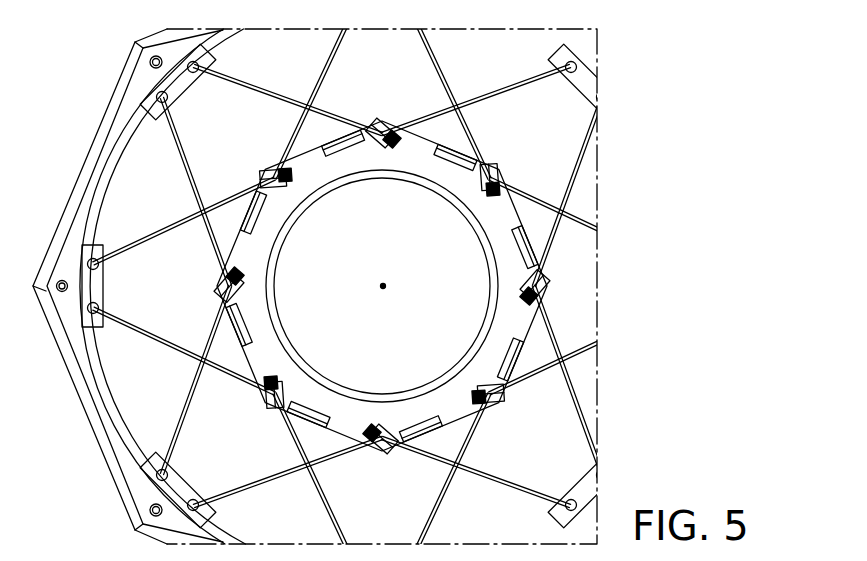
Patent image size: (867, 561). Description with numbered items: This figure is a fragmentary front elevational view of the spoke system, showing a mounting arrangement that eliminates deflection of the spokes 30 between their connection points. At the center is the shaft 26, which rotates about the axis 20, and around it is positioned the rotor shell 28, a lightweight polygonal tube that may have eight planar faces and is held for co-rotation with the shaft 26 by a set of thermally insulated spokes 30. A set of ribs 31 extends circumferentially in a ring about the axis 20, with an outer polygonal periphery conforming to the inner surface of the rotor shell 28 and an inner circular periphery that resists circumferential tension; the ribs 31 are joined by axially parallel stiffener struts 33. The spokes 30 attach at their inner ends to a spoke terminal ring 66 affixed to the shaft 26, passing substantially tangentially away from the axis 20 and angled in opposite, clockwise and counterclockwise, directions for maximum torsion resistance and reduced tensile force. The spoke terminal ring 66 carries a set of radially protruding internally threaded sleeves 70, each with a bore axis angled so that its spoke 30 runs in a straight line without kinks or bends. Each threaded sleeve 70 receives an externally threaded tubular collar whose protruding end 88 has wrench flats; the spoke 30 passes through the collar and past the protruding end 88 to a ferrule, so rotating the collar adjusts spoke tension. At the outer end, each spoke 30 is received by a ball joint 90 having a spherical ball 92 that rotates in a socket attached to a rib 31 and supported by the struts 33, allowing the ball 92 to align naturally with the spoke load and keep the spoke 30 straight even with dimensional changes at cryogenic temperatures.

The axis 20 is at (386, 286).
The shaft 26 is at (380, 184).
The rotor shell 28 is at (115, 98).
The spokes 30 is at (147, 334).
The ribs 31 is at (62, 257).
The stiffener struts 33 is at (60, 287).
The spoke terminal ring 66 is at (292, 348).
The threaded sleeves 70 is at (252, 362).
The protruding end 88 is at (217, 287).
The ball joint 90 is at (183, 80).
The spherical ball 92 is at (93, 245).